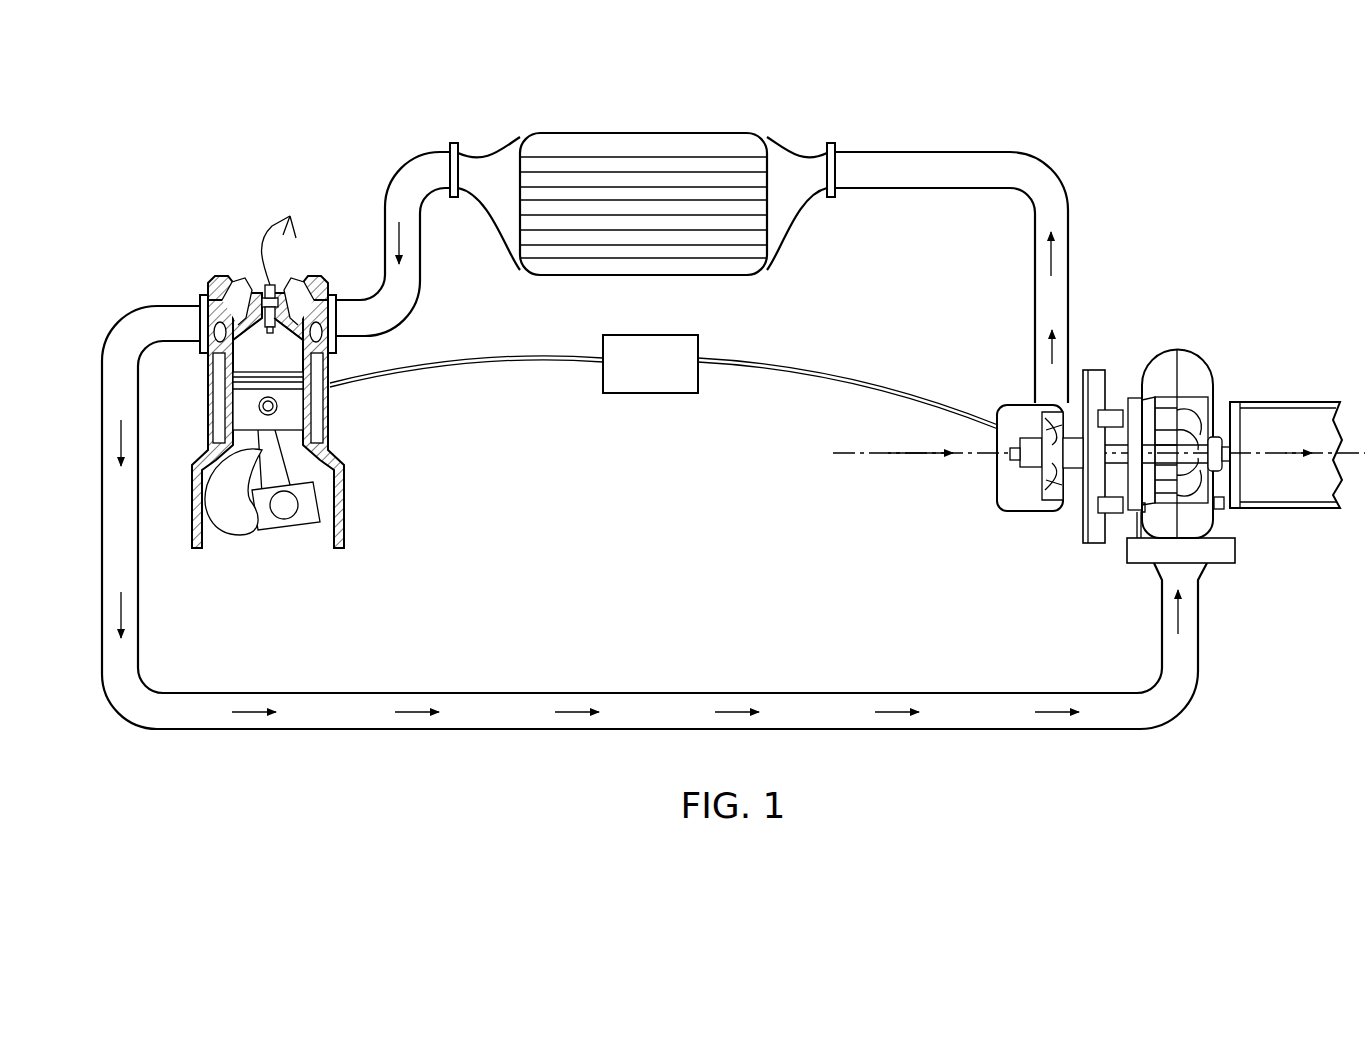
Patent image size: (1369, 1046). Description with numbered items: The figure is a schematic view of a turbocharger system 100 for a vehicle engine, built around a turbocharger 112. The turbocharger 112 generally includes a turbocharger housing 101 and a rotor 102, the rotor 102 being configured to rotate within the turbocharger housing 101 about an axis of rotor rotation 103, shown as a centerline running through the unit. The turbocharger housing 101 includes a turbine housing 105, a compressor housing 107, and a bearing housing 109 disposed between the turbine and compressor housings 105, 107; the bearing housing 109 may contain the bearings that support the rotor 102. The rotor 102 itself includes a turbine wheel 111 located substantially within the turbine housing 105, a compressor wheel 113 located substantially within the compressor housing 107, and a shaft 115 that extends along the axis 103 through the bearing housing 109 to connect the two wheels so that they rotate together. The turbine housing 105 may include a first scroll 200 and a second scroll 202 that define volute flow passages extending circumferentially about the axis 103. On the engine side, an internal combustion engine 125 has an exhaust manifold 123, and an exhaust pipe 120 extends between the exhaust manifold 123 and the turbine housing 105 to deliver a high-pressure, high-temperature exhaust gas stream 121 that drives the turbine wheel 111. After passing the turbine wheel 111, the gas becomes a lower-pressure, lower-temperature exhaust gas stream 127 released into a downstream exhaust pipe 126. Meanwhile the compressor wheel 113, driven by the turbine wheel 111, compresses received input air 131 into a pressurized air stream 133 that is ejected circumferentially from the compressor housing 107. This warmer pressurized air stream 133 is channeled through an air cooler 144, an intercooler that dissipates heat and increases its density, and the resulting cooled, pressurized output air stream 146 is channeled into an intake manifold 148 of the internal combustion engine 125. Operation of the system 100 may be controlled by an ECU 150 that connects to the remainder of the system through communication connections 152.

The turbocharger system 100 is at (1268, 252).
The turbocharger housing 101 is at (1150, 344).
The rotor 102 is at (1093, 464).
The axis of rotor rotation 103 is at (858, 458).
The turbine housing 105 is at (1188, 352).
The compressor housing 107 is at (1052, 508).
The bearing housing 109 is at (1118, 402).
The turbine wheel 111 is at (1167, 440).
The turbocharger 112 is at (1183, 287).
The compressor wheel 113 is at (1040, 484).
The shaft 115 is at (1116, 463).
The exhaust pipe 120 is at (1183, 713).
The exhaust gas stream 121 is at (740, 705).
The exhaust manifold 123 is at (226, 306).
The internal combustion engine 125 is at (296, 420).
The downstream exhaust pipe 126 is at (1293, 401).
The lower-pressure exhaust gas stream 127 is at (1275, 452).
The input air 131 is at (895, 450).
The pressurized air stream 133 is at (1033, 352).
The air cooler 144 is at (640, 160).
The output air stream 146 is at (396, 238).
The intake manifold 148 is at (332, 336).
The ECU 150 is at (648, 396).
The communication connections 152 is at (784, 376).
The first scroll 200 is at (1213, 350).
The second scroll 202 is at (1173, 345).